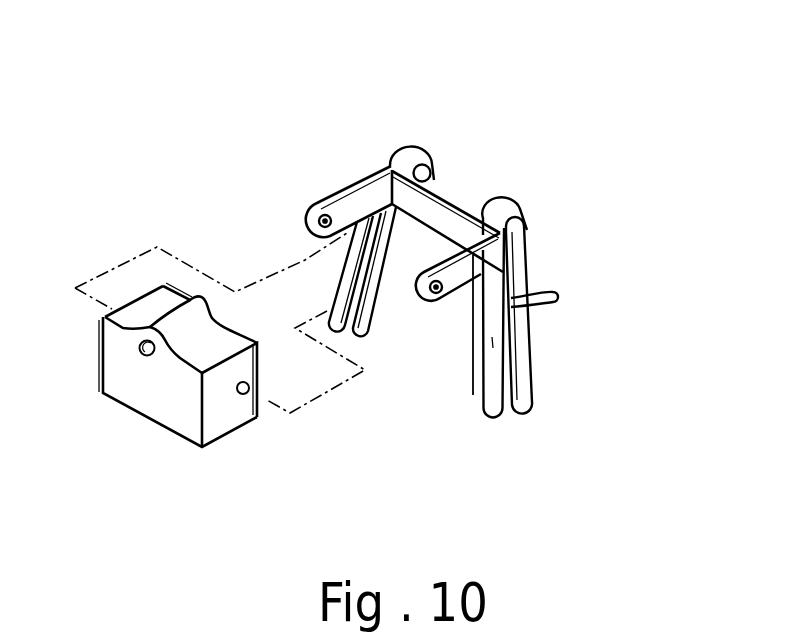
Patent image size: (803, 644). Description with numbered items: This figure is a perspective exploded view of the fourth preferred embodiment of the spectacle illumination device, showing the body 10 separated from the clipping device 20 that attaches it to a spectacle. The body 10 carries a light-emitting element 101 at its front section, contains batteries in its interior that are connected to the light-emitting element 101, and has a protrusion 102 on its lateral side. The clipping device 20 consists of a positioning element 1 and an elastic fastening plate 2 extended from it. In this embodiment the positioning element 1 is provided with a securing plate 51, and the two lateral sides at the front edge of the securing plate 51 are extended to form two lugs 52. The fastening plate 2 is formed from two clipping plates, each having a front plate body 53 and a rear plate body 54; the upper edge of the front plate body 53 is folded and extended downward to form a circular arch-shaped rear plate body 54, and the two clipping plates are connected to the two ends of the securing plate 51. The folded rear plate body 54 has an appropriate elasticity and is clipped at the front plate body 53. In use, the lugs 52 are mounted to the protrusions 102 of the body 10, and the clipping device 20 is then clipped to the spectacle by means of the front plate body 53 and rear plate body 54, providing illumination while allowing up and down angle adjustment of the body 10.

The positioning element 1 is at (382, 239).
The fastening plate 2 is at (527, 193).
The body 10 is at (134, 417).
The clipping device 20 is at (426, 146).
The securing plate 51 is at (441, 205).
The lug 52 is at (347, 195).
The front plate body 53 is at (318, 335).
The rear plate body 54 is at (358, 312).
The light-emitting element 101 is at (139, 355).
The protrusion 102 is at (247, 400).